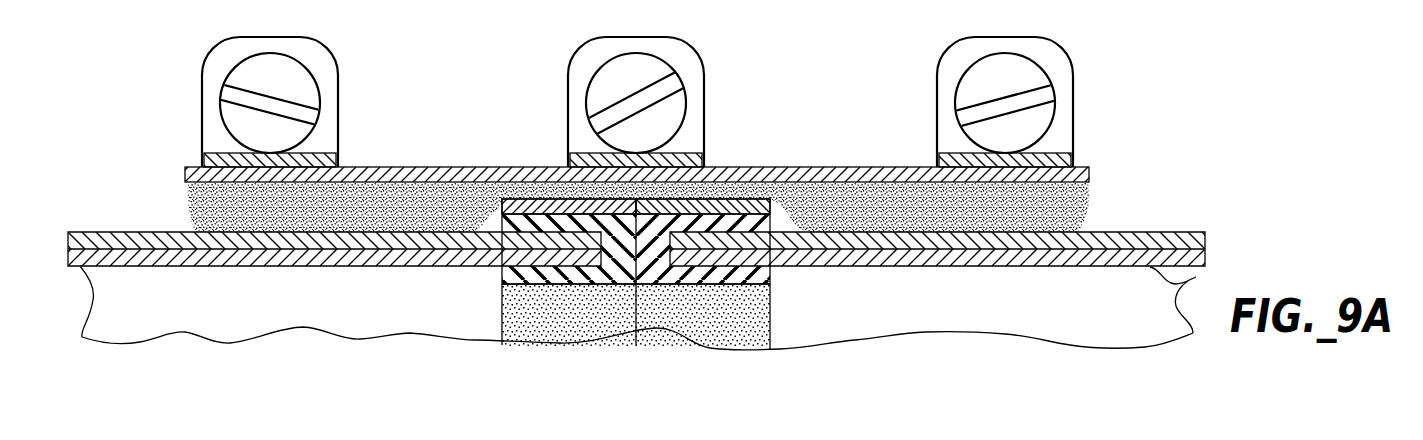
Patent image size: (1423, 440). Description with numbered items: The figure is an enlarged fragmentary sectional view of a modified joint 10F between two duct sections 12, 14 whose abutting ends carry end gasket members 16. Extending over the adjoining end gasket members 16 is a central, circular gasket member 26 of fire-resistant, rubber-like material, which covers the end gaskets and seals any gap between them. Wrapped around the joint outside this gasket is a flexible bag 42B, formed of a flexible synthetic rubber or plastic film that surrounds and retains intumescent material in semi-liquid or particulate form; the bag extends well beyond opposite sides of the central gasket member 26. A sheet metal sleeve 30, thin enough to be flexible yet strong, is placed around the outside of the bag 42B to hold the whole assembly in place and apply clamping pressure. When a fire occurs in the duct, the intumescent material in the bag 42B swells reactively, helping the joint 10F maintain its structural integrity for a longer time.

The modified joint 10F is at (810, 147).
The sheet metal sleeve 30 is at (438, 167).
The flexible bag 42B is at (1088, 222).
The central gasket member 26 is at (513, 199).
The duct section 14 is at (87, 282).
The end gasket member 16 is at (771, 272).
The duct section 12 is at (1196, 277).